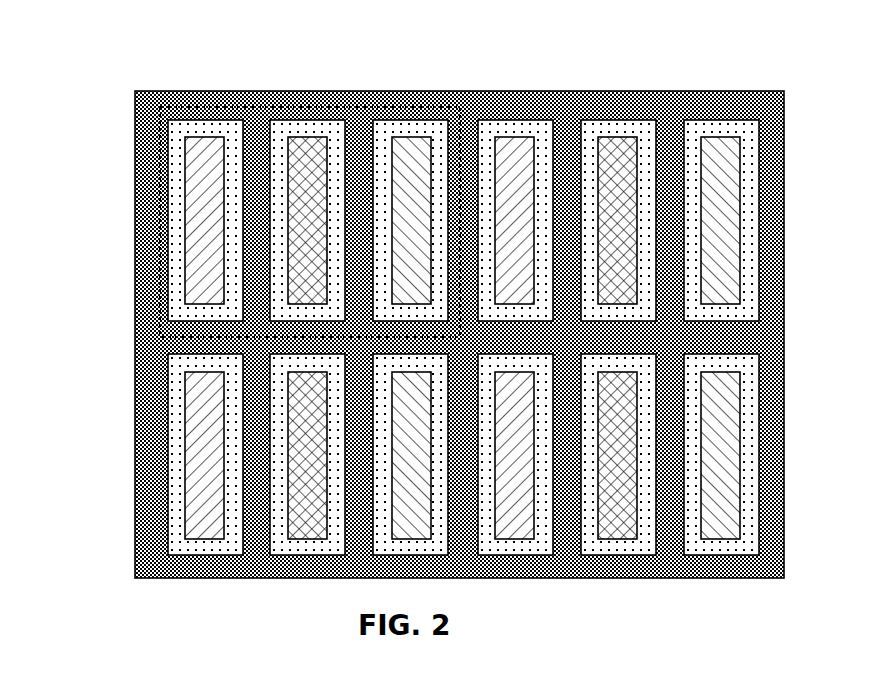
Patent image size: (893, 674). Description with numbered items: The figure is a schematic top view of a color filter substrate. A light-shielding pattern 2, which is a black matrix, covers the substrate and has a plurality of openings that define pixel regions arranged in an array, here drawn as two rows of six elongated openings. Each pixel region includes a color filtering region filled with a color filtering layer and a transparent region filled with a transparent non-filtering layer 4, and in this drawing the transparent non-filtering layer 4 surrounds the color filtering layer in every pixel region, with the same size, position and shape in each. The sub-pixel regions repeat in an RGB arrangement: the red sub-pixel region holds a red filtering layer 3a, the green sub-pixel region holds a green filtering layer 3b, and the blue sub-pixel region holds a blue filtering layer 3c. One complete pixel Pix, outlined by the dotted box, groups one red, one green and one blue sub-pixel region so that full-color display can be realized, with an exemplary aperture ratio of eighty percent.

The light-shielding pattern 2 is at (135, 115).
The red filtering layer 3a is at (203, 167).
The green filtering layer 3b is at (311, 167).
The blue filtering layer 3c is at (414, 167).
The transparent non-filtering layer 4 is at (383, 212).
The complete pixel Pix is at (458, 104).